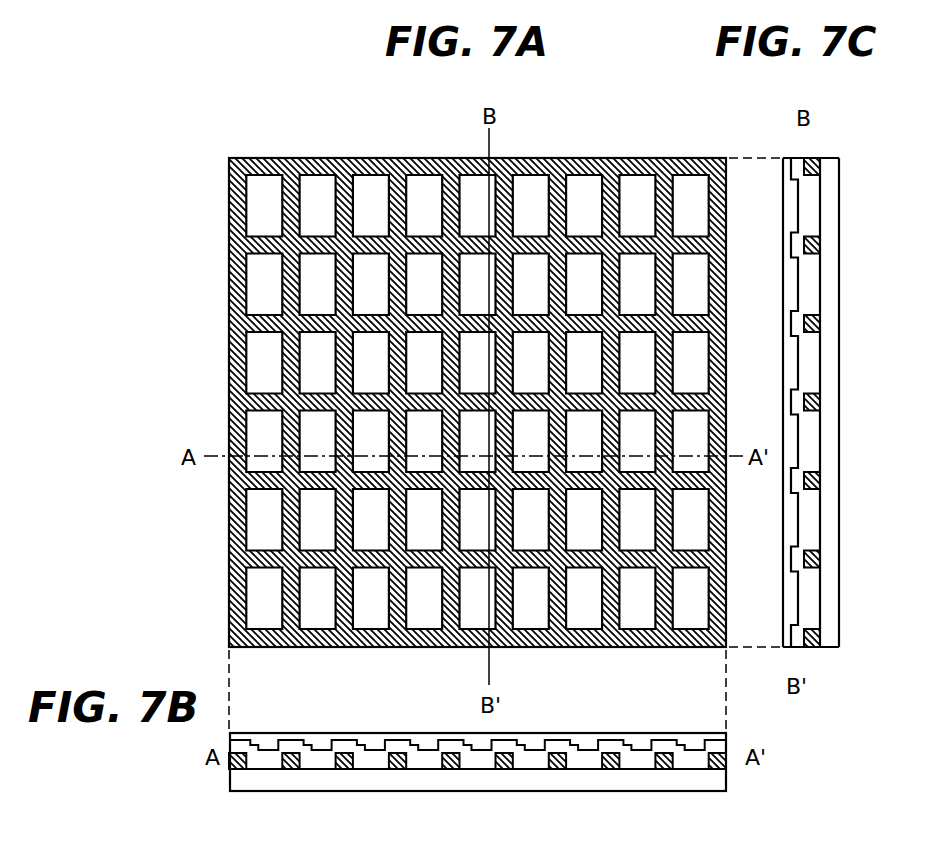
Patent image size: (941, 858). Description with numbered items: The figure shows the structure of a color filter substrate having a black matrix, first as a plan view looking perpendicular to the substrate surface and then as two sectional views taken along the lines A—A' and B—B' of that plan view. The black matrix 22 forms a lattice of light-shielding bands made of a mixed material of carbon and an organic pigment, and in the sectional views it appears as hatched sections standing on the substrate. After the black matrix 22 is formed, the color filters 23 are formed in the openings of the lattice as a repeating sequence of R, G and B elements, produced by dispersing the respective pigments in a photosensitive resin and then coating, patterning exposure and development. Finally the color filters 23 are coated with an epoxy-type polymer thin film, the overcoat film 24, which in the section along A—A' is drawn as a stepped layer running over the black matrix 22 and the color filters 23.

In FIG. 7A, the black matrix 22 is at (727, 566).
In FIG. 7C, the black matrix 22 is at (821, 558).
In FIG. 7B, the black matrix 22 is at (400, 770).
In FIG. 7A, the color filters 23 is at (268, 620).
In FIG. 7B, the overcoat film 24 is at (583, 740).